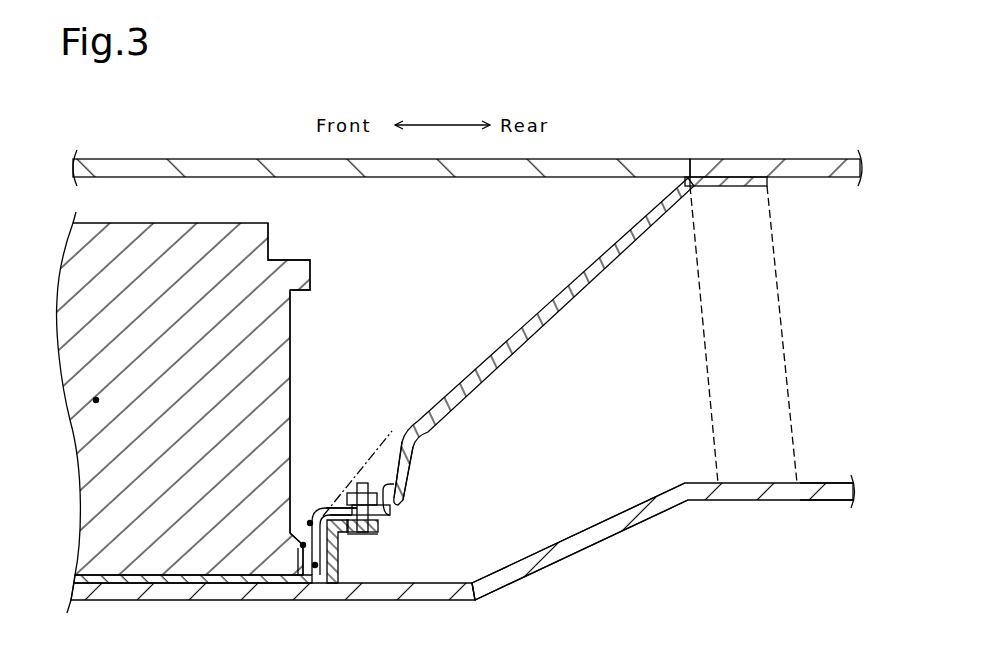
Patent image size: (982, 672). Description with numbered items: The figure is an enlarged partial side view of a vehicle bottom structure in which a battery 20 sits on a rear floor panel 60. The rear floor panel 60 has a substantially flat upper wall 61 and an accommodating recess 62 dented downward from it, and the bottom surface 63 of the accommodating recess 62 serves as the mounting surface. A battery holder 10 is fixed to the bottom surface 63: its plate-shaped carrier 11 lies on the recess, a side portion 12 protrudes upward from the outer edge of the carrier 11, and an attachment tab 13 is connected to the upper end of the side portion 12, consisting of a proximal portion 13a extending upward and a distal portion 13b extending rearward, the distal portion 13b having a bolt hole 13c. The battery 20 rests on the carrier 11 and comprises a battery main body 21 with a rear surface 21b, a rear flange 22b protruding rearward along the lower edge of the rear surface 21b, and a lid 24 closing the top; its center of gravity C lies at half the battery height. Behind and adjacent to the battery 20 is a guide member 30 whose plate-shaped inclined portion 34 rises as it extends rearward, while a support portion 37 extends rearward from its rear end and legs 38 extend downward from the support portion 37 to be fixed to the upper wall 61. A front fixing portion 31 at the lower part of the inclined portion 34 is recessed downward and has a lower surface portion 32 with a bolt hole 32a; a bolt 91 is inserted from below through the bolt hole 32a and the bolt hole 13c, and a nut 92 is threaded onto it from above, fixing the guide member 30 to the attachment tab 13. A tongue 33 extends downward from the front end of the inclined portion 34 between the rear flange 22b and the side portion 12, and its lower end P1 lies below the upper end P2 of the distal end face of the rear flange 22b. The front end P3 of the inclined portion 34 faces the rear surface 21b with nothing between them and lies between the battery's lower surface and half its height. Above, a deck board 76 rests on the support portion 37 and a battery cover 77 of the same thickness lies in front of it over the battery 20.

The battery holder 10 is at (215, 600).
The carrier 11 is at (165, 600).
The side portion 12 is at (337, 595).
The attachment tab 13 is at (392, 515).
The proximal portion 13a is at (350, 535).
The distal portion 13b is at (378, 500).
The bolt hole 13c is at (391, 527).
The battery 20 is at (250, 223).
The battery main body 21 is at (292, 320).
The rear surface 21b is at (292, 357).
The rear flange 22b is at (295, 535).
The lid 24 is at (300, 260).
The guide member 30 is at (566, 288).
The front fixing portion 31 is at (410, 468).
The lower surface portion 32 is at (403, 492).
The bolt hole 32a is at (356, 485).
The tongue 33 is at (298, 557).
The inclined portion 34 is at (503, 344).
The support portion 37 is at (737, 177).
The leg 38 is at (780, 305).
The rear floor panel 60 is at (684, 483).
The upper wall 61 is at (830, 483).
The accommodating recess 62 is at (566, 538).
The bottom surface 63 is at (458, 583).
The deck board 76 is at (796, 159).
The battery cover 77 is at (126, 159).
The bolt 91 is at (368, 536).
The nut 92 is at (336, 505).
The center of gravity C is at (95, 385).
The lower end of the tongue P1 is at (315, 568).
The upper end of the distal end face of the rear flange P2 is at (301, 543).
The front end of the inclined portion P3 is at (310, 520).